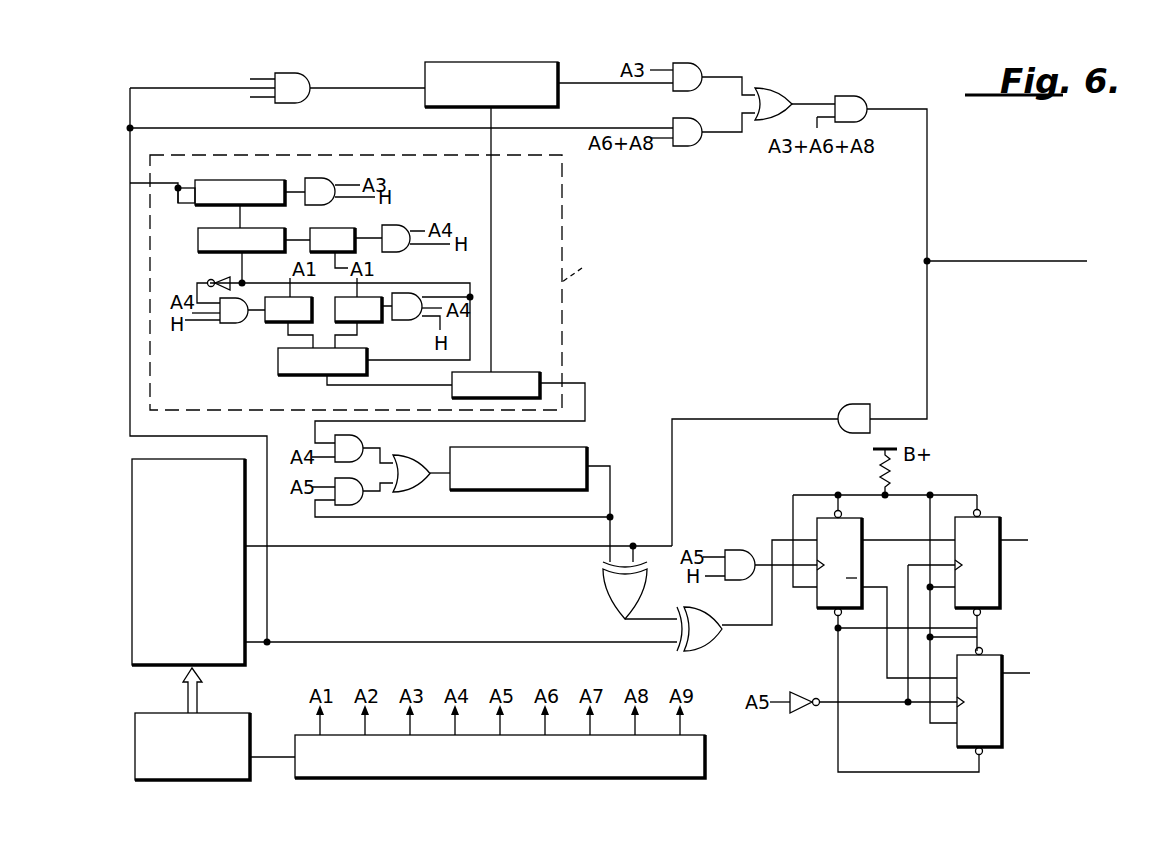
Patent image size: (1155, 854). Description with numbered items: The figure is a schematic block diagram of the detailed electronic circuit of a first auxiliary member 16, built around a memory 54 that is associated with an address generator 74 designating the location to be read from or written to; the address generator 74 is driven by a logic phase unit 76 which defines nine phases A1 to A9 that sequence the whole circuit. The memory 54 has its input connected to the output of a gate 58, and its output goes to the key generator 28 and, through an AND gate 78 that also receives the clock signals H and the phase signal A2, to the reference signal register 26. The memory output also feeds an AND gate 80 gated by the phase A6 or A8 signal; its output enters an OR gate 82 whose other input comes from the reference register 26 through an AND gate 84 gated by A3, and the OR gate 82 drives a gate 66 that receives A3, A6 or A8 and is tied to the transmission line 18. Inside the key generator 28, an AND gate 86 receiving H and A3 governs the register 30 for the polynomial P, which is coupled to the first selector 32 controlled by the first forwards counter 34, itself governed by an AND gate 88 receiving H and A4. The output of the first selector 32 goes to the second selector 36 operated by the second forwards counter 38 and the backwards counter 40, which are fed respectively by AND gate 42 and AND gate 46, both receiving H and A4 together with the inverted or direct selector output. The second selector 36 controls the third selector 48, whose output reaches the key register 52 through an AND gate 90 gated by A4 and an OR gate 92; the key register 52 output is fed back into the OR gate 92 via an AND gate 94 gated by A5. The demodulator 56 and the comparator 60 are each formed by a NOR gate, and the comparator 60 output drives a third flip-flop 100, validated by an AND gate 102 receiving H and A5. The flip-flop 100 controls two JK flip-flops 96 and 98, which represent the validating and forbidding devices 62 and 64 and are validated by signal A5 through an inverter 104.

The first auxiliary member 16 is at (988, 350).
The transmission line 18 is at (968, 261).
The reference signal register 26 is at (560, 100).
The key generator 28 is at (562, 234).
The register 30 is at (195, 205).
The first selector 32 is at (198, 248).
The first forwards counter 34 is at (335, 234).
The second selector 36 is at (278, 375).
The second forwards counter 38 is at (268, 322).
The backwards counter 40 is at (372, 320).
The AND gate 42 is at (232, 323).
The AND gate 46 is at (410, 320).
The third selector 48 is at (512, 372).
The key register 52 is at (588, 448).
The memory 54 is at (200, 567).
The demodulator 56 is at (604, 592).
The gate 58 is at (856, 404).
The comparator 60 is at (714, 637).
The validating and forbidding device 62 is at (1010, 687).
The validating and forbidding device 64 is at (1012, 558).
The gate 66 is at (852, 97).
The address generator 74 is at (232, 713).
The logic phase unit 76 is at (707, 750).
The AND gate 78 is at (310, 76).
The AND gate 80 is at (687, 147).
The OR gate 82 is at (775, 95).
The AND gate 84 is at (692, 66).
The AND gate 86 is at (322, 178).
The AND gate 88 is at (404, 250).
The AND gate 90 is at (348, 435).
The OR gate 92 is at (408, 468).
The AND gate 94 is at (360, 503).
The JK flip-flop 96 is at (1003, 732).
The JK flip-flop 98 is at (1003, 600).
The third flip-flop 100 is at (820, 609).
The AND gate 102 is at (740, 550).
The inverter 104 is at (808, 684).